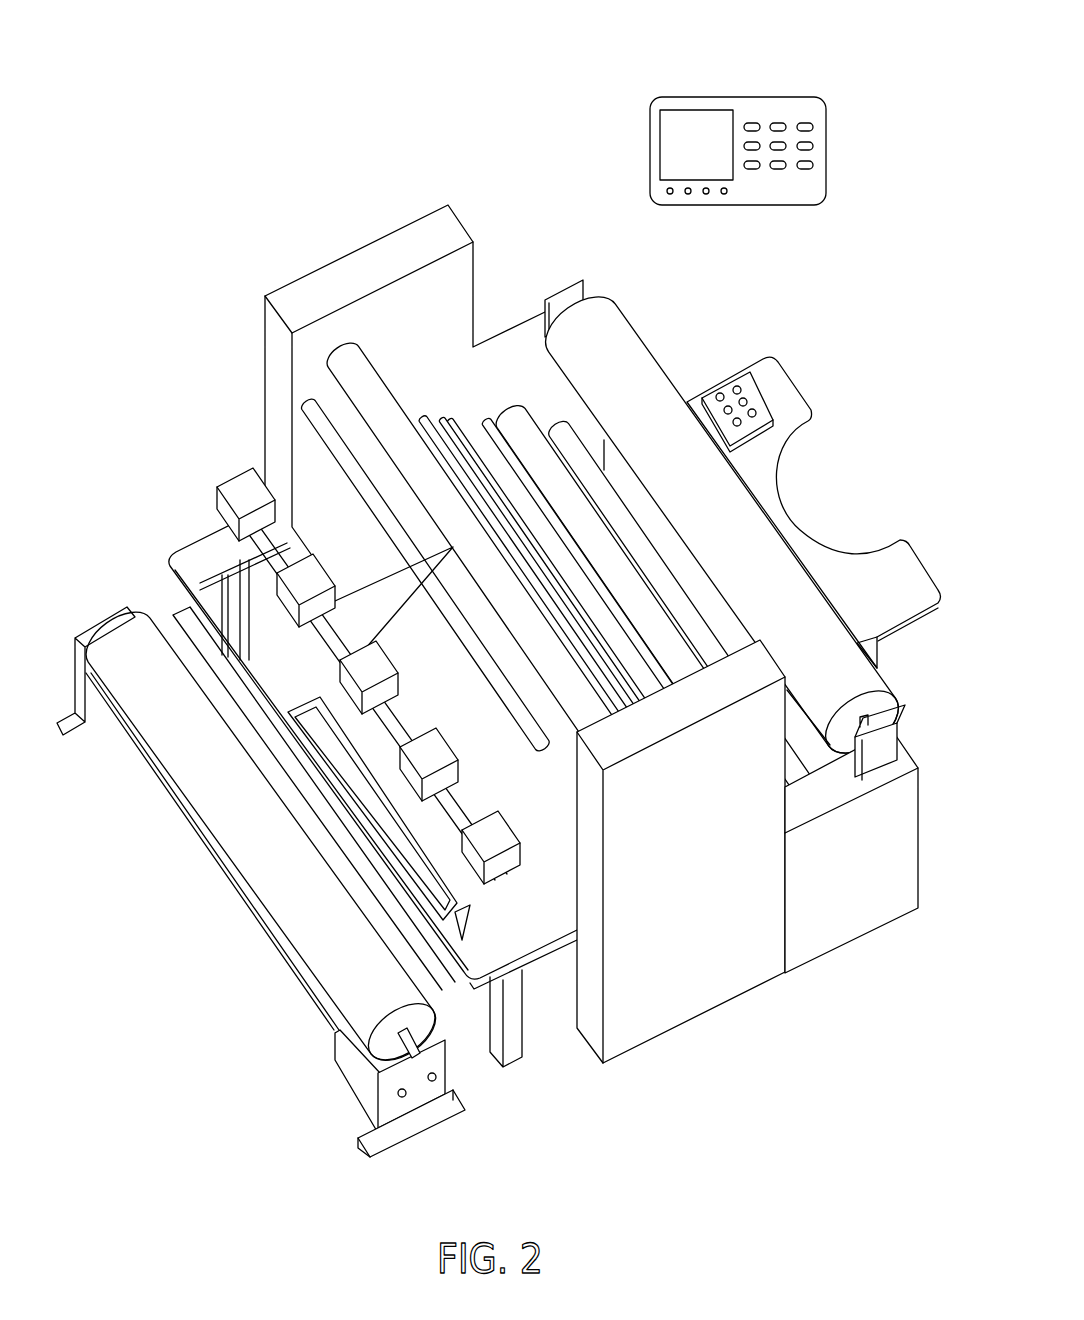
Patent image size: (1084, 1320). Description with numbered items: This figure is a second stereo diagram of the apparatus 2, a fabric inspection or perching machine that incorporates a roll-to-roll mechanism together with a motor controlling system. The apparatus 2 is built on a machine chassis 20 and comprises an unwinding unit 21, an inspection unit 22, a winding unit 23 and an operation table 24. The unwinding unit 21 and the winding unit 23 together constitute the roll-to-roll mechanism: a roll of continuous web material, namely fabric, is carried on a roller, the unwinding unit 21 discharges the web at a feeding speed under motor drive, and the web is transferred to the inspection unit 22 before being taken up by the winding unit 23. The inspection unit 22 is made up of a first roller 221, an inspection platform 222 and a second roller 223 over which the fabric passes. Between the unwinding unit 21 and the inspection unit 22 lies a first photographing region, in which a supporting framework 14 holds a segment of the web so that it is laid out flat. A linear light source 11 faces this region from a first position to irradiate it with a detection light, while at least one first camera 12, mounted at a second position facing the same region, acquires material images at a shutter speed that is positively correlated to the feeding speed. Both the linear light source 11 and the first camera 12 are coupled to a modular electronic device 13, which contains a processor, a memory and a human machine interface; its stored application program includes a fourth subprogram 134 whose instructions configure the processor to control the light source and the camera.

The apparatus 2 is at (499, 623).
The linear light source 11 is at (473, 906).
The first camera 12 is at (218, 505).
The modular electronic device 13 is at (755, 116).
The fourth subprogram 134 is at (813, 147).
The supporting framework 14 is at (183, 557).
The machine chassis 20 is at (262, 283).
The unwinding unit 21 is at (140, 755).
The inspection unit 22 is at (575, 451).
The first roller 221 is at (349, 357).
The inspection platform 222 is at (426, 415).
The third roller 223 is at (515, 416).
The winding unit 23 is at (598, 295).
The operation table 24 is at (812, 402).